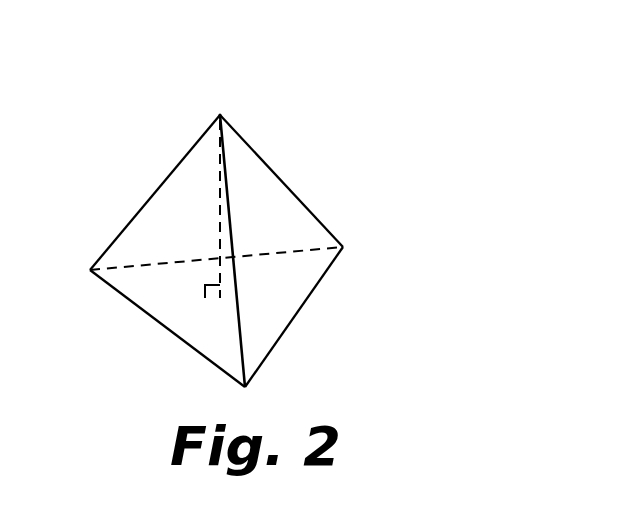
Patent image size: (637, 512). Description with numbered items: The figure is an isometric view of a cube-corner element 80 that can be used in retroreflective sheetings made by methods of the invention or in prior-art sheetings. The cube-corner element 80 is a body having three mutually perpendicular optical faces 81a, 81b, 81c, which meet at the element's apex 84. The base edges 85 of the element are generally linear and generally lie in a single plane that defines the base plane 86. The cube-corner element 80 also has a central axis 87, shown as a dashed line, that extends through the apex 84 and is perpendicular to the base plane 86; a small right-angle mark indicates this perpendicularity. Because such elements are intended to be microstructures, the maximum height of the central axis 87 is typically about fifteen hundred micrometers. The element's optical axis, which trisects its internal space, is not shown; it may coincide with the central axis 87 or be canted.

The cube-corner element 80 is at (326, 69).
The optical face 81a is at (160, 205).
The optical face 81b is at (270, 190).
The optical face 81c is at (203, 160).
The apex 84 is at (220, 115).
The base edges 85 is at (317, 245).
The base plane 86 is at (197, 322).
The central axis 87 is at (218, 246).